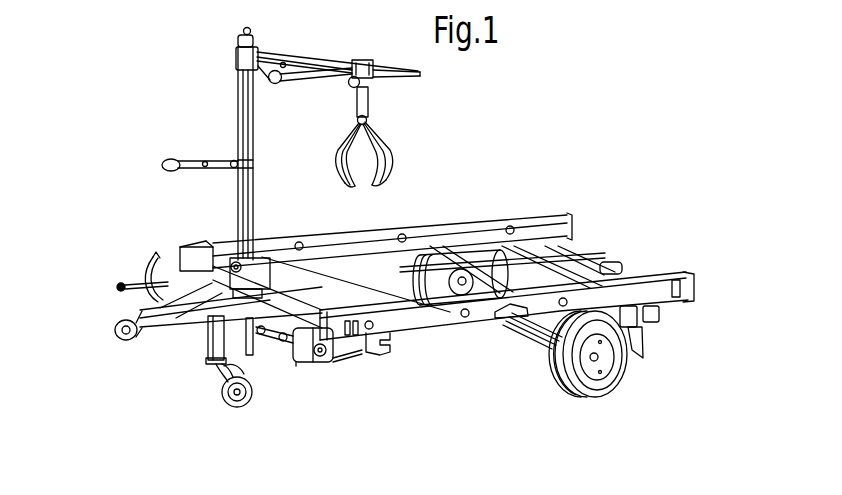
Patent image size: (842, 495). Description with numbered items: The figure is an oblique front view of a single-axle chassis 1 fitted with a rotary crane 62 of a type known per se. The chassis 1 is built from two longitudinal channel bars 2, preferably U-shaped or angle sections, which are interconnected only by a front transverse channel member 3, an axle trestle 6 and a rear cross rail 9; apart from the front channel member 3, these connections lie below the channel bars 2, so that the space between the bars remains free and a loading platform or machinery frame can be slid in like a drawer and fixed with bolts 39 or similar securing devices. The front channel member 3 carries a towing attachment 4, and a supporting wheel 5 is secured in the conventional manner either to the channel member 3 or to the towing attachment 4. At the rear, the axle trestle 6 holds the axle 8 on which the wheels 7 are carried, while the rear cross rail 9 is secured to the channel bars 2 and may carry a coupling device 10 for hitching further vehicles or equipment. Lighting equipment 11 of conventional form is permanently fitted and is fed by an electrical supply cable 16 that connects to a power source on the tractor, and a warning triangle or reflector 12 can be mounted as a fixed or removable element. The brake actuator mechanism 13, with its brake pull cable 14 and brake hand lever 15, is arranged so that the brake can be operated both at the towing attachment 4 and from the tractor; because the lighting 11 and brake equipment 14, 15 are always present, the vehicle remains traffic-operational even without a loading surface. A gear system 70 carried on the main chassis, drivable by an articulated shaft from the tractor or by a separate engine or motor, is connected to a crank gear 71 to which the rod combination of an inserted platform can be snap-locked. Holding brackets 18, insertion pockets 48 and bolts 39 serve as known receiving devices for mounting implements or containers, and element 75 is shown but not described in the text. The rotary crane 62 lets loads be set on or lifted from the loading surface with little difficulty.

The chassis 1 is at (217, 250).
The longitudinal channel bars 2 is at (345, 238).
The front transverse channel member 3 is at (189, 246).
The towing attachment 4 is at (177, 326).
The supporting wheel 5 is at (212, 365).
The axle trestle 6 is at (497, 262).
The wheels 7 is at (598, 396).
The axle 8 is at (353, 359).
The rear cross rail 9 is at (586, 262).
The coupling device 10 is at (620, 270).
The lighting equipment 11 is at (636, 313).
The warning triangle or reflector 12 is at (637, 352).
The brake actuator mechanism 13 is at (513, 322).
The brake pull cable 14 is at (380, 287).
The brake hand lever 15 is at (155, 262).
The electrical supply cable 16 is at (140, 281).
The holding bracket 18 is at (378, 358).
The bolts 39 is at (299, 242).
The insertion pocket 48 is at (695, 291).
The rotary crane 62 is at (244, 118).
The gear system 70 is at (306, 364).
The crank gear 71 is at (327, 363).
The caster fork 75 is at (247, 345).